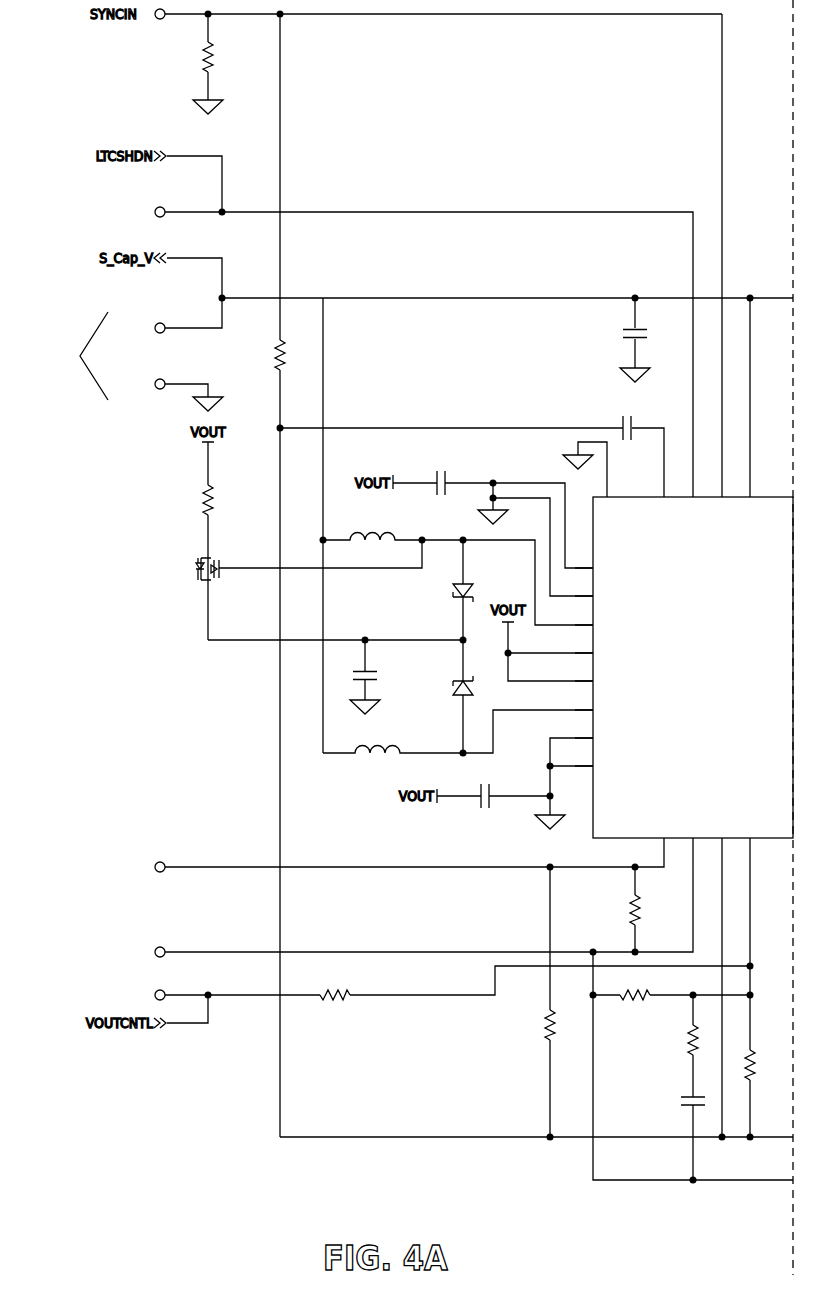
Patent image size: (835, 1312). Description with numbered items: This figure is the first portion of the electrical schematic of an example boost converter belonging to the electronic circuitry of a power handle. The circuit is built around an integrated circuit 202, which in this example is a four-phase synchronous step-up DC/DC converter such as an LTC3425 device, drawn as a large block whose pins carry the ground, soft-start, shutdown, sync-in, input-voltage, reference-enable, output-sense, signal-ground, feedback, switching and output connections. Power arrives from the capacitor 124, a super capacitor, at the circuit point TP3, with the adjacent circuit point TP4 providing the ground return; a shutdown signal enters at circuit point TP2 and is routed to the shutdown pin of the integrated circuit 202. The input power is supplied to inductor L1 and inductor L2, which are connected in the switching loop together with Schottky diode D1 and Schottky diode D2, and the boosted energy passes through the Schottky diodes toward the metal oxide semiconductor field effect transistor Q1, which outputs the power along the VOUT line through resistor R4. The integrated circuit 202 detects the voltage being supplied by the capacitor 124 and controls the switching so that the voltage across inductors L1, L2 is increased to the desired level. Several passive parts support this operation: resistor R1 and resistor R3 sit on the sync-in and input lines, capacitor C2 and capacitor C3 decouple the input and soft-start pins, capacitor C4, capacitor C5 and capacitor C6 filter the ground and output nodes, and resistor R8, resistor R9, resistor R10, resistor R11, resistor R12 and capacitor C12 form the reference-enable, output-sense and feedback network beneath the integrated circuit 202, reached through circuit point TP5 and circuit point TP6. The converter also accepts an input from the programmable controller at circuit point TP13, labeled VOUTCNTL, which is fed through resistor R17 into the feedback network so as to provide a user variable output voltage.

The capacitor 124 is at (121, 357).
The integrated circuit 202 is at (684, 669).
The resistor R1 is at (214, 64).
The resistor R3 is at (290, 575).
The resistor R4 is at (218, 541).
The resistor R8 is at (646, 909).
The resistor R9 is at (560, 1002).
The resistor R10 is at (671, 984).
The resistor R11 is at (678, 1046).
The resistor R12 is at (765, 987).
The resistor R17 is at (457, 983).
The capacitor C2 is at (643, 340).
The capacitor C3 is at (472, 445).
The capacitor C4 is at (493, 510).
The capacitor C5 is at (373, 677).
The capacitor C6 is at (493, 786).
The capacitor C12 is at (679, 1136).
The inductor L1 is at (458, 567).
The inductor L2 is at (458, 731).
The Schottky diode D1 is at (452, 590).
The Schottky diode D2 is at (475, 696).
The metal oxide semiconductor field effect transistor Q1 is at (297, 560).
The circuit point TP2 is at (138, 204).
The circuit point TP3 is at (147, 320).
The circuit point TP4 is at (168, 385).
The circuit point TP5 is at (136, 859).
The circuit point TP6 is at (135, 944).
The circuit point TP13 is at (133, 986).